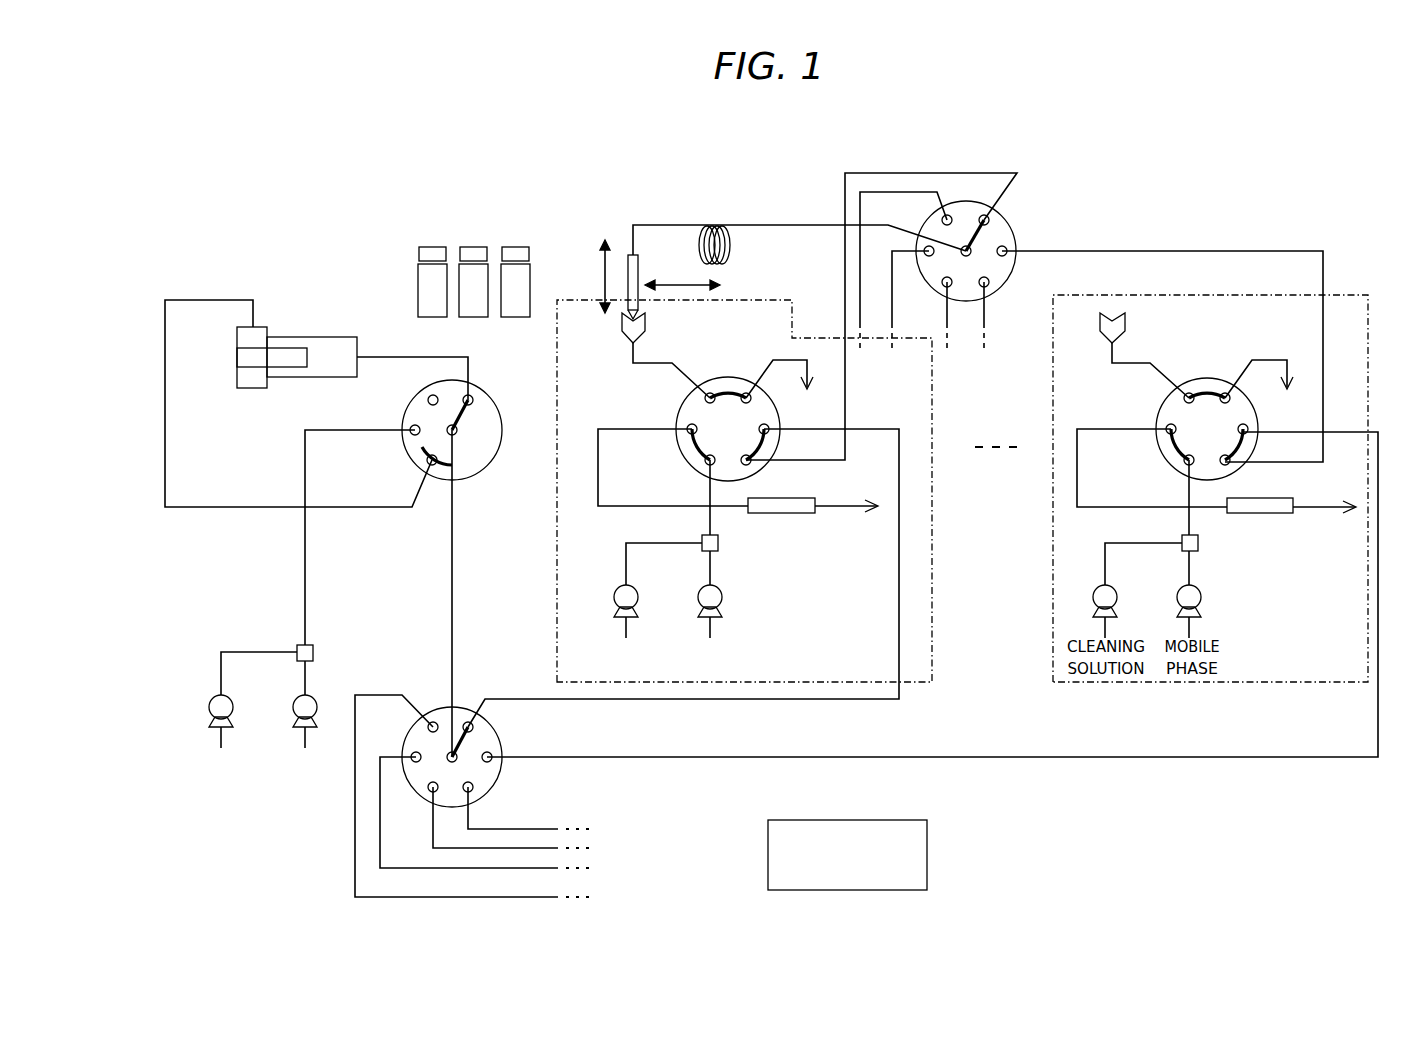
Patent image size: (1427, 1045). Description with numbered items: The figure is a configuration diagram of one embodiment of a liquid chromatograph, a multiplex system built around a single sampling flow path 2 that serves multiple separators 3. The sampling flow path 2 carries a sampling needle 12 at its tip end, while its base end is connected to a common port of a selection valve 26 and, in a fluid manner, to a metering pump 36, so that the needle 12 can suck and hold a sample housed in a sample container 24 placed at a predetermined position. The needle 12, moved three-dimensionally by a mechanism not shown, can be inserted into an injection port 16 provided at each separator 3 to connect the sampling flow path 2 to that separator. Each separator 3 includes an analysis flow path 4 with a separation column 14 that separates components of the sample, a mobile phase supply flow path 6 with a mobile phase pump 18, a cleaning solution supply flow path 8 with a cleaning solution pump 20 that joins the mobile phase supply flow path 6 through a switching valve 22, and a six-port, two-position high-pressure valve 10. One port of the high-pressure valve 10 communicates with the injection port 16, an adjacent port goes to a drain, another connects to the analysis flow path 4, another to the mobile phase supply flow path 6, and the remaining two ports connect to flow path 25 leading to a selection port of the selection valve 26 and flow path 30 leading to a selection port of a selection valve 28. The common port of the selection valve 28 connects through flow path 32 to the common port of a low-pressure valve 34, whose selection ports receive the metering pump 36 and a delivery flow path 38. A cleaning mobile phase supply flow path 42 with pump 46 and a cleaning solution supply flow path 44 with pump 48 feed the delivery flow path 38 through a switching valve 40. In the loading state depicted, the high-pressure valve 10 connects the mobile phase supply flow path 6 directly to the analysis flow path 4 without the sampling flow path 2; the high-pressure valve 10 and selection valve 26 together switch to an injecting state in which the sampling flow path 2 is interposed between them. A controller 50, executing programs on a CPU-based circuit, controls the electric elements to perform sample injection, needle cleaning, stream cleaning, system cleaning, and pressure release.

The sampling flow path 2 is at (690, 222).
The separator 3 is at (935, 523).
The analysis flow path 4 is at (598, 468).
The mobile phase supply flow path 6 is at (713, 563).
The cleaning solution supply flow path 8 is at (626, 568).
The high-pressure valve 10 is at (730, 378).
The sampling needle 12 is at (628, 262).
The separation column 14 is at (780, 512).
The injection port 16 is at (628, 332).
The mobile phase pump 18 is at (712, 598).
The cleaning solution pump 20 is at (625, 598).
The switching valve 22 is at (720, 543).
The sample container 24 is at (417, 280).
The flow path 25 is at (845, 403).
The selection valve 26 is at (1008, 218).
The selection valve 28 is at (498, 782).
The flow path 30 is at (790, 700).
The flow path 32 is at (453, 590).
The low-pressure valve 34 is at (495, 402).
The metering pump 36 is at (313, 337).
The delivery flow path 38 is at (308, 587).
The switching valve 40 is at (315, 645).
The mobile phase supply flow path 42 is at (307, 677).
The cleaning solution supply flow path 44 is at (242, 648).
The pump 46 is at (317, 705).
The pump 48 is at (209, 707).
The controller 50 is at (928, 837).